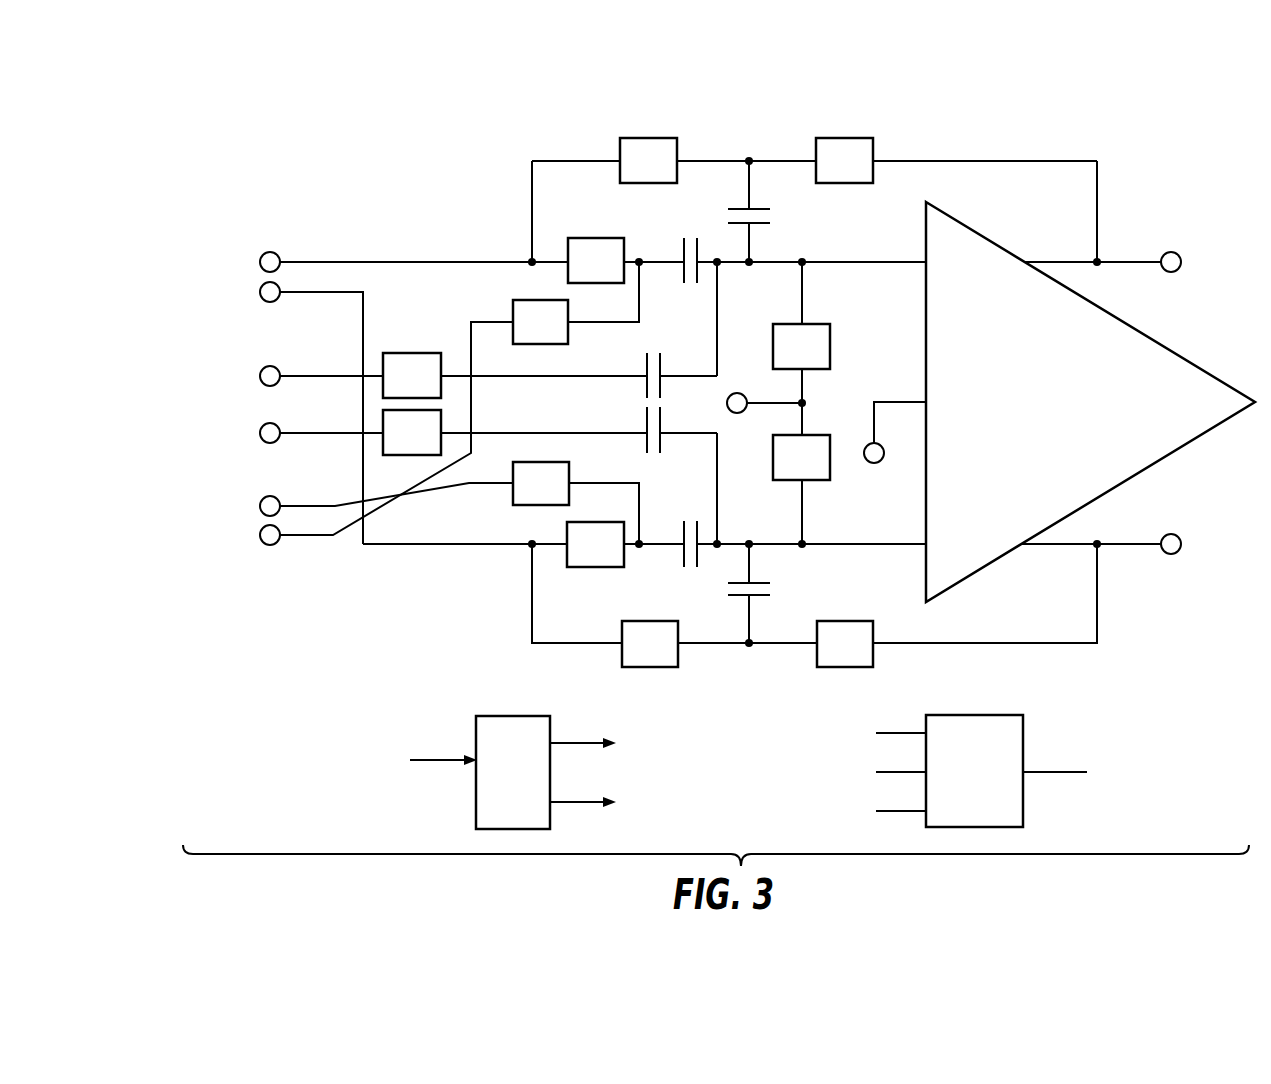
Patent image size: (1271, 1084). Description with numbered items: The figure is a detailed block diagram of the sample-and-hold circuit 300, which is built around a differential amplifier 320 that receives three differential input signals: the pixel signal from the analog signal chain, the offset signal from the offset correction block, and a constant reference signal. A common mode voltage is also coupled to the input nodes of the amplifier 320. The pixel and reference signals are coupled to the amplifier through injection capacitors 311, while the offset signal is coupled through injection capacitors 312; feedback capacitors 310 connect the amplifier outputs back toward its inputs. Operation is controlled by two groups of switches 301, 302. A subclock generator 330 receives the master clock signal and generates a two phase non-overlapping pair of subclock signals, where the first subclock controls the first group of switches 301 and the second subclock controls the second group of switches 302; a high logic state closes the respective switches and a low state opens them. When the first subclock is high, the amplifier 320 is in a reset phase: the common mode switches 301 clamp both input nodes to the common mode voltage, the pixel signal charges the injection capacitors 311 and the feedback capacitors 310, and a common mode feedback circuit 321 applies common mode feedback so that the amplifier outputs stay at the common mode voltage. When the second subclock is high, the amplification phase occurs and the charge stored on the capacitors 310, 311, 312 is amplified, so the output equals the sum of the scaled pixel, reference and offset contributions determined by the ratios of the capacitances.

The sample-and-hold circuit 300 is at (485, 135).
The switches 301 is at (666, 172).
The switches 302 is at (862, 172).
The feedback capacitors 310 is at (745, 207).
The injection capacitors 311 is at (682, 244).
The injection capacitors 312 is at (662, 362).
The differential amplifier 320 is at (1018, 406).
The common mode feedback circuit 321 is at (994, 785).
The subclock generator 330 is at (533, 774).